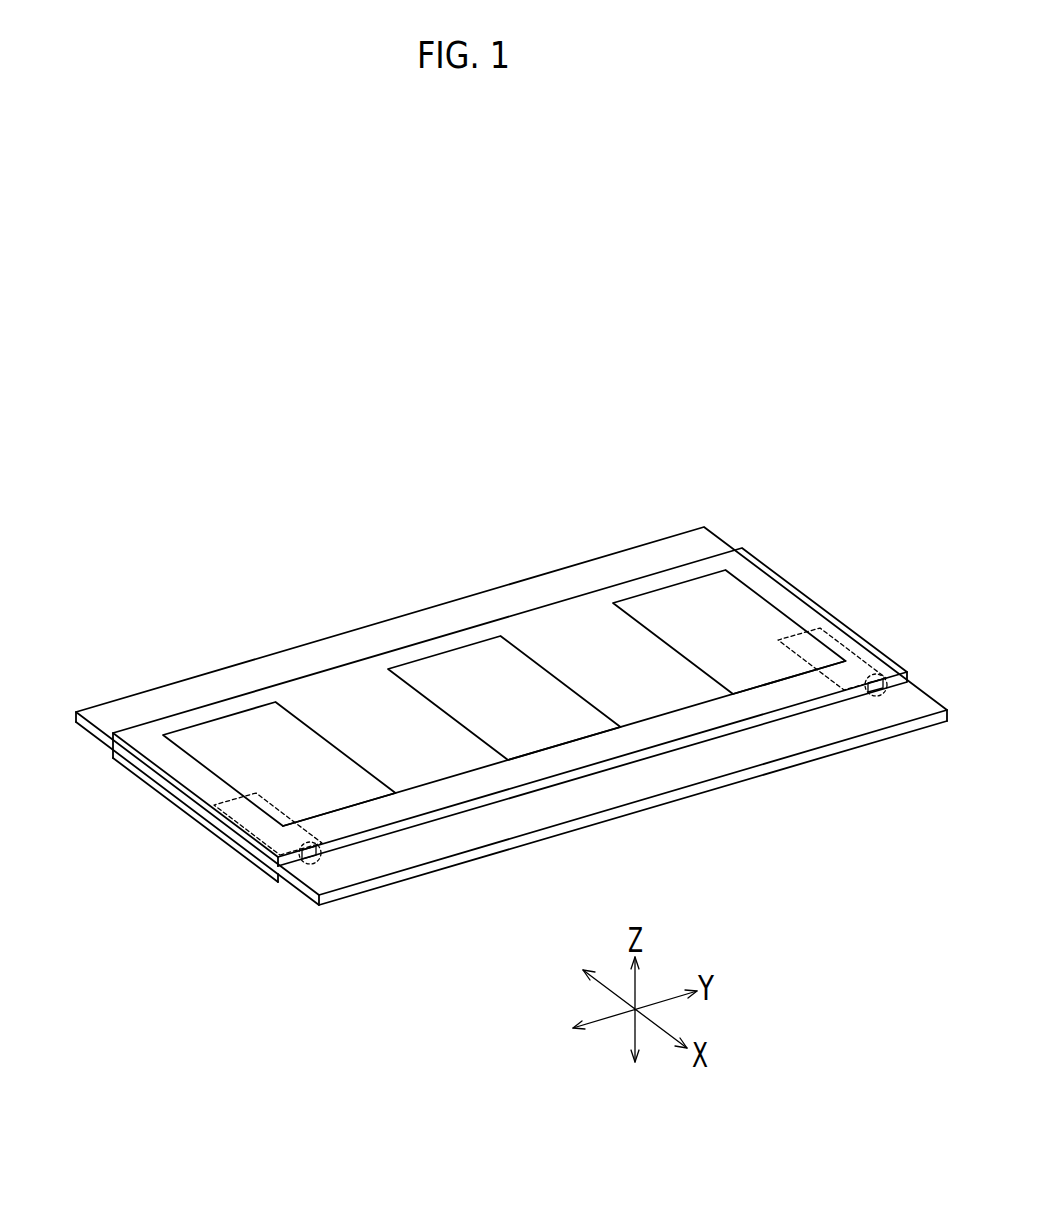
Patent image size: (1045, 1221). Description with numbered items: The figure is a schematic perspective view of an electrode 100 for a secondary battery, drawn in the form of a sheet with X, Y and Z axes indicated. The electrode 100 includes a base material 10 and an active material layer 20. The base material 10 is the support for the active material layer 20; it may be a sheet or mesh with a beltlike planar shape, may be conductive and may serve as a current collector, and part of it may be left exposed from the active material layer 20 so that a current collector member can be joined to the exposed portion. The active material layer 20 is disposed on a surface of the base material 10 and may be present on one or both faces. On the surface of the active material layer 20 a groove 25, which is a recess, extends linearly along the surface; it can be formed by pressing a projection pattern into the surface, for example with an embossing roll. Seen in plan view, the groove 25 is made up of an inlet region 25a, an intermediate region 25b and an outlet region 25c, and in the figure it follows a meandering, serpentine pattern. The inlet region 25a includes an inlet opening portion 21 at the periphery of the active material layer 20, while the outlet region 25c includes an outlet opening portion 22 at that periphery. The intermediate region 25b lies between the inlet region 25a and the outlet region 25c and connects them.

The electrode 100 is at (137, 500).
The base material 10 is at (128, 706).
The active material layer 20 is at (843, 632).
The inlet opening portion 21 is at (318, 860).
The outlet opening portion 22 is at (878, 690).
The groove 25 is at (504, 627).
The inlet region 25a is at (262, 812).
The intermediate region 25b is at (433, 655).
The outlet region 25c is at (833, 647).